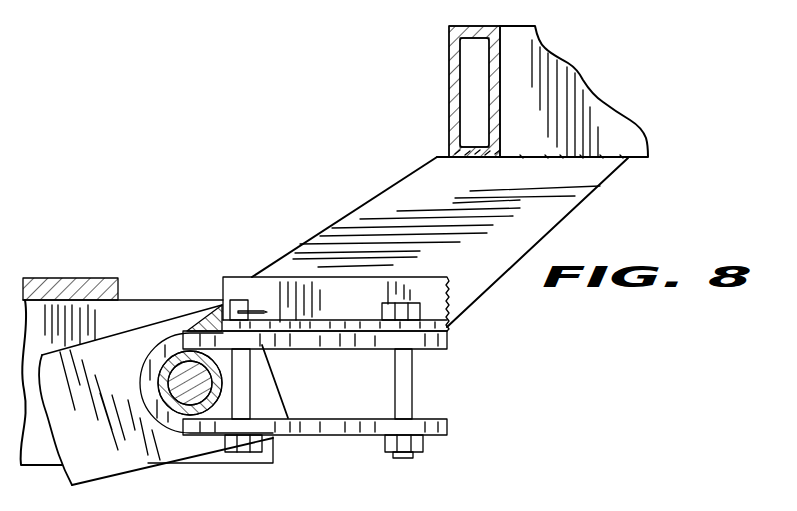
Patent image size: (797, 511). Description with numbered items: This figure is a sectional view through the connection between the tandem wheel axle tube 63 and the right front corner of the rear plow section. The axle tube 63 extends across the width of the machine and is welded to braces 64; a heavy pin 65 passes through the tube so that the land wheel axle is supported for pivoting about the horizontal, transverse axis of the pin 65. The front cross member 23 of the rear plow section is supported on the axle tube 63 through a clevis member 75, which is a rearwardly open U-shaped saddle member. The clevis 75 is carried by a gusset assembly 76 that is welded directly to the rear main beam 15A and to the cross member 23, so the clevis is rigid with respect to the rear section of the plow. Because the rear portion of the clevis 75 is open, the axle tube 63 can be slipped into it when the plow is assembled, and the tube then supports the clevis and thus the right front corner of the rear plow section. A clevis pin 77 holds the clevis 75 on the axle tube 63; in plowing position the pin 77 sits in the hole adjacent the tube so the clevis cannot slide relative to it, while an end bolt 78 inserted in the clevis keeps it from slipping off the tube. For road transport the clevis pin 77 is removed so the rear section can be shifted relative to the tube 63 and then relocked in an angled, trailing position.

The front cross member 23 is at (448, 82).
The rear main beam 15A is at (603, 130).
The gusset assembly 76 is at (558, 184).
The clevis member 75 is at (447, 342).
The clevis pin 77 is at (242, 383).
The end bolt 78 is at (407, 395).
The heavy pin 65 is at (189, 380).
The axle tube 63 is at (160, 364).
The braces 64 is at (93, 458).